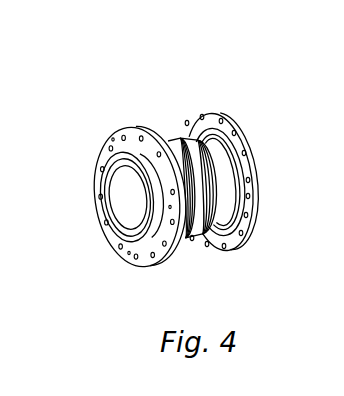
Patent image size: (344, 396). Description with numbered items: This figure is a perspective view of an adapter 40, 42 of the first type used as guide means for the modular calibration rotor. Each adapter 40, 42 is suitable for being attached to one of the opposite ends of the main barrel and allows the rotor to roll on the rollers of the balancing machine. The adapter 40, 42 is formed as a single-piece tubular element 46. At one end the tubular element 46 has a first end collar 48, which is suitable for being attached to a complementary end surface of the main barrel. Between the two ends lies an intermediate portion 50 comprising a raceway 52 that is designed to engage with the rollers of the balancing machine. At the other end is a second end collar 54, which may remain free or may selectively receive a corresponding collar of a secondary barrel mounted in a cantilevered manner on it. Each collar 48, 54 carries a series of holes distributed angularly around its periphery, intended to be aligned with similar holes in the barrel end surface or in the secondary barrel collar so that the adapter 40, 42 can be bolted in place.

The adapter 40 is at (213, 93).
The adapter 42 is at (189, 202).
The single-piece tubular element 46 is at (185, 240).
The first end collar 48 is at (257, 170).
The intermediate portion 50 is at (215, 156).
The raceway 52 is at (176, 141).
The second end collar 54 is at (120, 129).